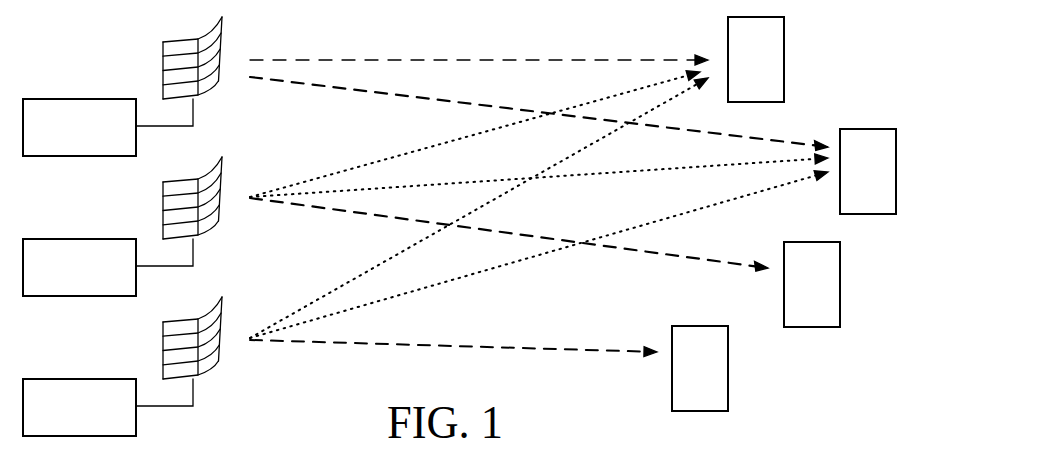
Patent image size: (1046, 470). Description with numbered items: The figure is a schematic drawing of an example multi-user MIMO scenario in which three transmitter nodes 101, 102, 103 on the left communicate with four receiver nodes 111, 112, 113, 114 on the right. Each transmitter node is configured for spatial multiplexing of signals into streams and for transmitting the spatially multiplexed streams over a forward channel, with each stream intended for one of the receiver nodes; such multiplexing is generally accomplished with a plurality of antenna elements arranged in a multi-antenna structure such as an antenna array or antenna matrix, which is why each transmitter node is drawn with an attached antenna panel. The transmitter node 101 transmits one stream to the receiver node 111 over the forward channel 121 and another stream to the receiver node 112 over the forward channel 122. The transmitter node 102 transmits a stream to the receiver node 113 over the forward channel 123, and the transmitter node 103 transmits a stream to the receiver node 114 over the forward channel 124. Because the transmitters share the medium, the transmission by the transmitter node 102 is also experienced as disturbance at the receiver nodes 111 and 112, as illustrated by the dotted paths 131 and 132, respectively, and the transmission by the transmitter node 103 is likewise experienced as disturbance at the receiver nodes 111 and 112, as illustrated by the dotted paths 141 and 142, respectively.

The transmitter node 101 is at (122, 86).
The transmitter node 102 is at (122, 226).
The transmitter node 103 is at (122, 366).
The receiver node 111 is at (756, 59).
The receiver node 112 is at (868, 171).
The receiver node 113 is at (812, 284).
The receiver node 114 is at (700, 368).
The forward channel 121 is at (625, 57).
The forward channel 122 is at (783, 143).
The forward channel 123 is at (733, 262).
The forward channel 124 is at (587, 350).
The disturbance 131 is at (417, 152).
The disturbance 132 is at (395, 187).
The disturbance 141 is at (360, 275).
The disturbance 142 is at (353, 308).